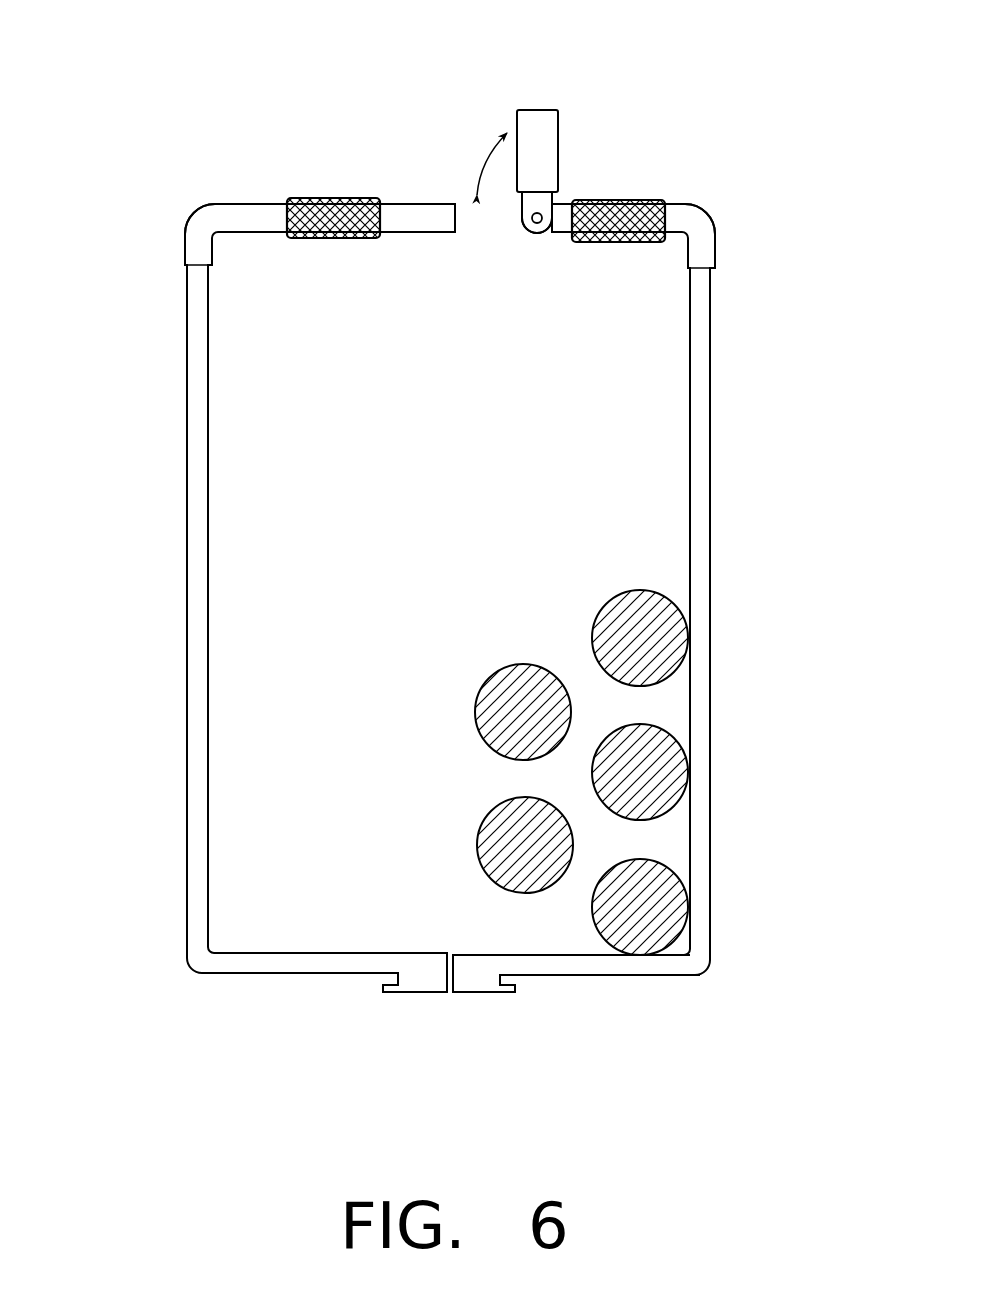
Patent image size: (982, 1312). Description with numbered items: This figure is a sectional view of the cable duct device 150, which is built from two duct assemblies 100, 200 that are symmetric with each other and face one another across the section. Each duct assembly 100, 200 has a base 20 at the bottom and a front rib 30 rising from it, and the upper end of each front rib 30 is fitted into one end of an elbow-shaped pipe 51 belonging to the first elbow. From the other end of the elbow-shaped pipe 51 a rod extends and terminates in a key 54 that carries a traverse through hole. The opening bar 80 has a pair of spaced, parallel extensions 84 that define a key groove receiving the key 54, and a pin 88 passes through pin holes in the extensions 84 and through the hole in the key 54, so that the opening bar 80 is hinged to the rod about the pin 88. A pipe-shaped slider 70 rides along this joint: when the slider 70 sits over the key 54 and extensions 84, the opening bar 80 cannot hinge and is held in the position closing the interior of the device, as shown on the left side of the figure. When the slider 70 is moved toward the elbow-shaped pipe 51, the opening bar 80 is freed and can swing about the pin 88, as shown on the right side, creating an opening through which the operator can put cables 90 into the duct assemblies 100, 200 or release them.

The duct assembly 100 is at (172, 630).
The duct assembly 200 is at (722, 558).
The front rib 30 is at (196, 545).
The elbow-shaped pipe 51 is at (258, 213).
The pipe-shaped slider 70 is at (327, 195).
The opening bar 80 is at (540, 108).
The extensions 84 is at (525, 215).
The pin 88 is at (538, 225).
The key 54 is at (555, 228).
The base 20 is at (283, 963).
The cable duct device 150 is at (472, 1066).
The cables 90 is at (667, 770).